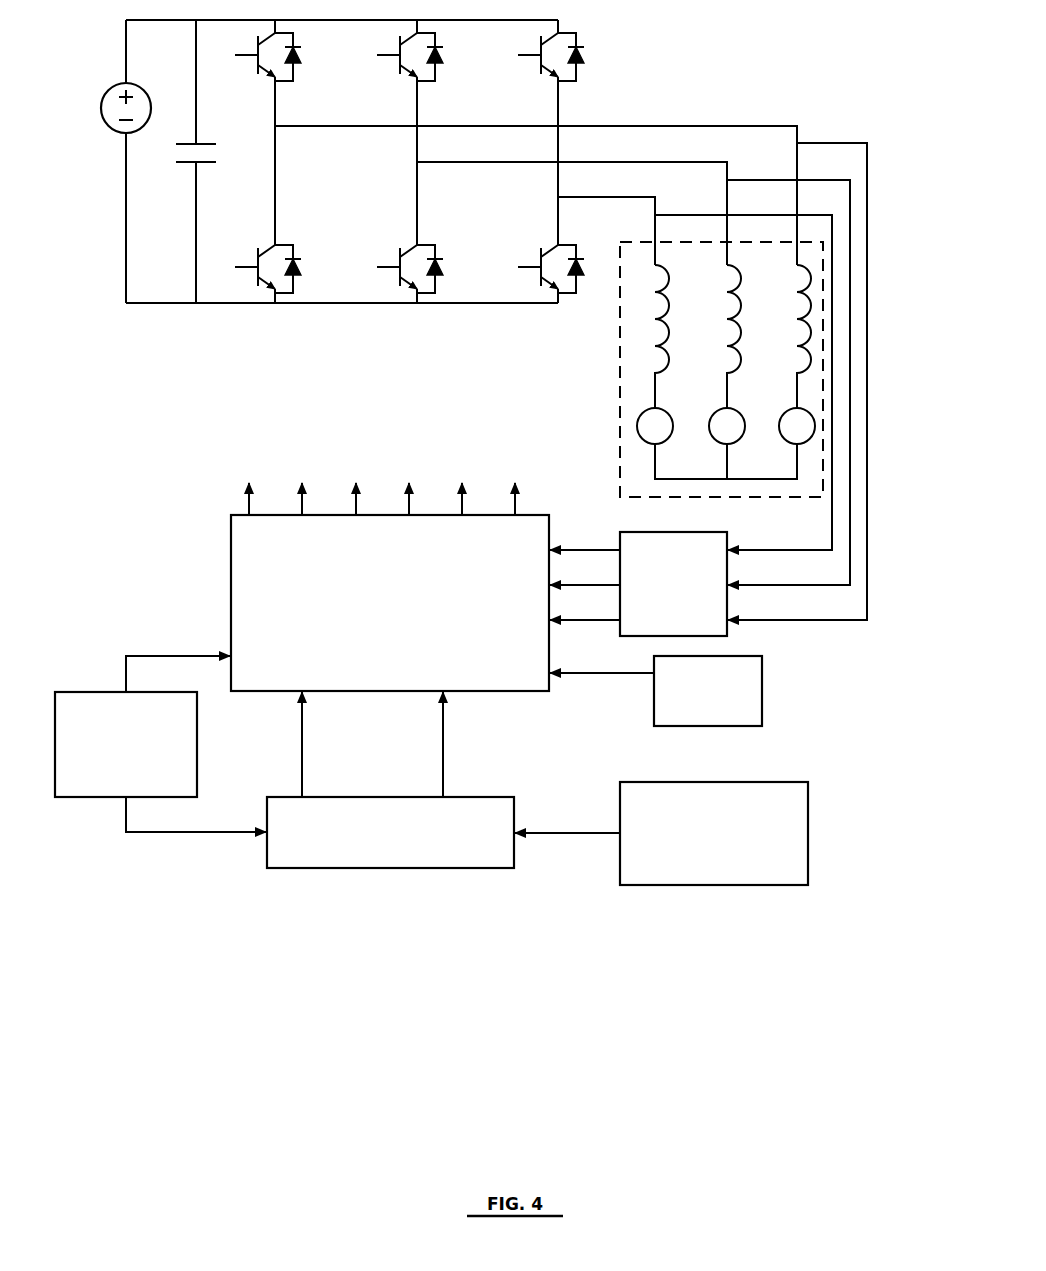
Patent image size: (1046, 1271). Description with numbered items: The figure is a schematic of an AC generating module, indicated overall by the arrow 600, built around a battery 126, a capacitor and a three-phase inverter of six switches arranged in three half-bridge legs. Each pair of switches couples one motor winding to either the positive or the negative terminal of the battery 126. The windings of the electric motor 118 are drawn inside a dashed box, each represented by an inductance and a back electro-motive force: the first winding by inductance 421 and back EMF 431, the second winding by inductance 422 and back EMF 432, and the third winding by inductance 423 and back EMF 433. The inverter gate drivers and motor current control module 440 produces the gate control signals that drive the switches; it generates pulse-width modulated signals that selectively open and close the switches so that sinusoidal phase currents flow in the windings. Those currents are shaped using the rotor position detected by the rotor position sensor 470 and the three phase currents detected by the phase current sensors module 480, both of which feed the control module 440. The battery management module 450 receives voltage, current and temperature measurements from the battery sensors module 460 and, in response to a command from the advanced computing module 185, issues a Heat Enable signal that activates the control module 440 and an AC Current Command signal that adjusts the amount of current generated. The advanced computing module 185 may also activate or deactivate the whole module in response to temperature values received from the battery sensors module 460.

The motor drive system 600 is at (728, 986).
The battery 126 is at (102, 110).
The electric motor 118 is at (620, 364).
The inductance 421 is at (668, 276).
The inductance 422 is at (741, 271).
The inductance 423 is at (801, 347).
The back EMF 431 is at (665, 410).
The back EMF 432 is at (710, 433).
The back EMF 433 is at (780, 433).
The inverter gate drivers & motor current control module 440 is at (231, 548).
The phase current sensors module 480 is at (684, 532).
The rotor position sensor 470 is at (654, 690).
The advanced computing module 185 is at (160, 744).
The battery management module 450 is at (267, 850).
The battery sensors module 460 is at (620, 866).